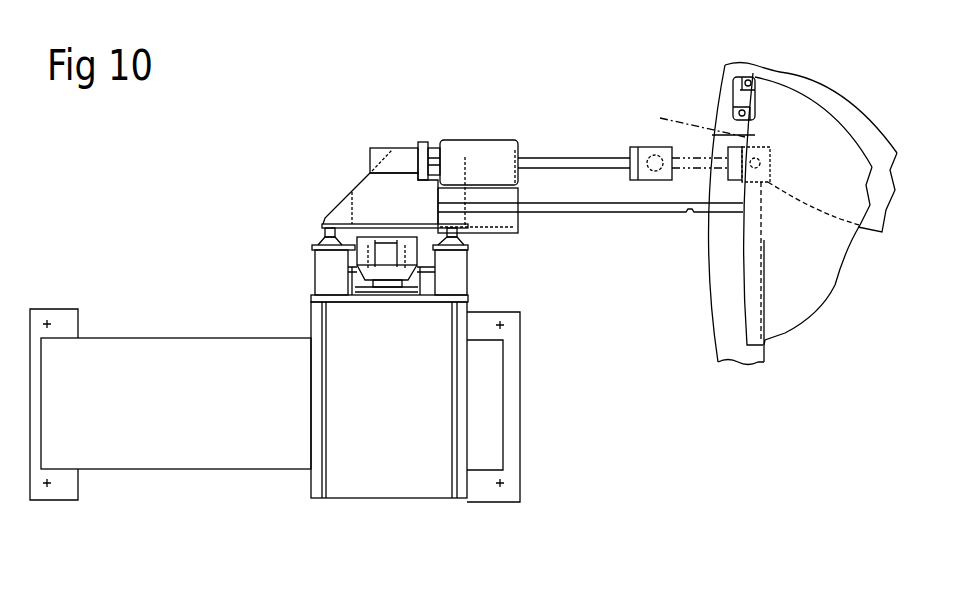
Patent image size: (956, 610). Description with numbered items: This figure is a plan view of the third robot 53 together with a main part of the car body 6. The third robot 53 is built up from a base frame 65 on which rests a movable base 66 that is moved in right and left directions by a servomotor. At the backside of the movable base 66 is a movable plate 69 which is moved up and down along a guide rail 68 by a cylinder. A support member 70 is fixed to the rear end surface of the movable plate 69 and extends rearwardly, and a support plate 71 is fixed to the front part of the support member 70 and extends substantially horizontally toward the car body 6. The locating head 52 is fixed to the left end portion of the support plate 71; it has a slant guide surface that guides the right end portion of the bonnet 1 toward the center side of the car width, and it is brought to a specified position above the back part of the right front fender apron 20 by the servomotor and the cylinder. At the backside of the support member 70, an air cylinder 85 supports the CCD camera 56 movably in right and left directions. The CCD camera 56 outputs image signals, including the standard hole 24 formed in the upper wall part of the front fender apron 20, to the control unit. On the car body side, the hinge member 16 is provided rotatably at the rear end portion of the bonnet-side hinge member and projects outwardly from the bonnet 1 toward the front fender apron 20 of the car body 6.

The bonnet 1 is at (830, 136).
The car body 6 is at (710, 342).
The hinge member on the car body side 16 is at (722, 93).
The front fender apron 20 is at (725, 290).
The standard hole 24 is at (767, 181).
The locating head 52 is at (730, 218).
The third robot 53 is at (205, 210).
The CCD camera 56 is at (655, 147).
The base frame 65 is at (178, 338).
The movable base 66 is at (352, 490).
The guide rail 68 is at (325, 220).
The movable plate 69 is at (487, 237).
The support member 70 is at (400, 187).
The support plate 71 is at (613, 213).
The air cylinder 85 is at (380, 148).